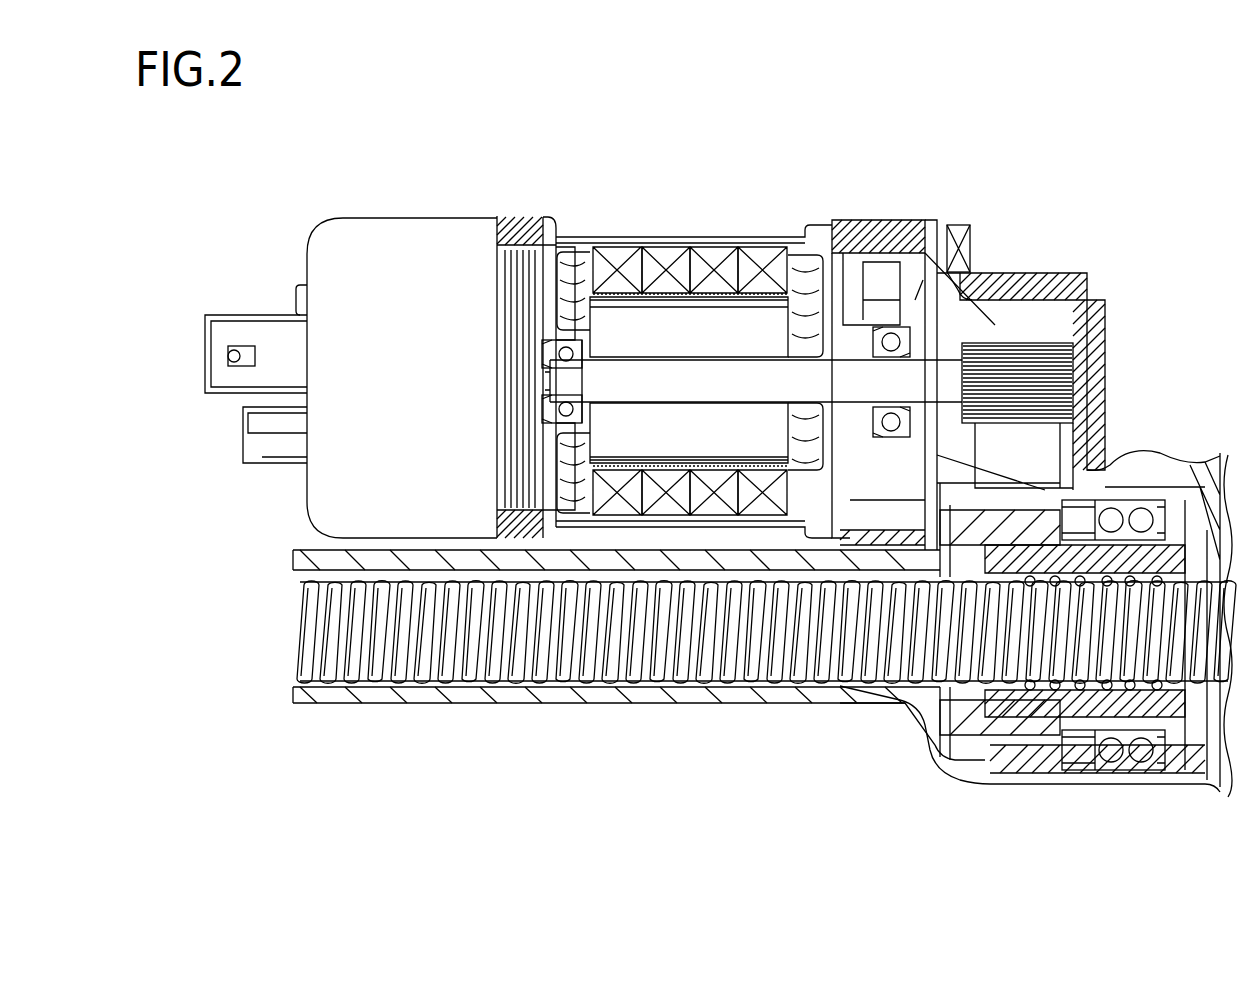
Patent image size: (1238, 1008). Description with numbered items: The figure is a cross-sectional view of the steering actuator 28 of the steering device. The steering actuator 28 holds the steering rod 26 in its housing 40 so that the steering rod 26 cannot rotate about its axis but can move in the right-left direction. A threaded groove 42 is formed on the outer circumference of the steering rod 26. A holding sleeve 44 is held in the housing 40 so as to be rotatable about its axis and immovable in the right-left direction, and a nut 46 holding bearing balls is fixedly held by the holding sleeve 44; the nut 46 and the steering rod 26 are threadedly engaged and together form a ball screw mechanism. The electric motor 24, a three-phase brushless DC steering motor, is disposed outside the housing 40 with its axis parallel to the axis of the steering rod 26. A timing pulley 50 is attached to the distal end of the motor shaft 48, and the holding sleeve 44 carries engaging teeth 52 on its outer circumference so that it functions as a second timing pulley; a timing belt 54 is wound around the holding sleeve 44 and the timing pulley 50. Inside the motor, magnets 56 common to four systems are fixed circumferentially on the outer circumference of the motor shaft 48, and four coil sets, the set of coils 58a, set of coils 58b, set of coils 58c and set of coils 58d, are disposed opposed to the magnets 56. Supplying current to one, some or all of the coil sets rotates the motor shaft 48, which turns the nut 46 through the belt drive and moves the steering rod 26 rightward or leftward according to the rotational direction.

The electric motor 24 is at (840, 191).
The steering rod 26 is at (582, 680).
The steering actuator 28 is at (1150, 100).
The housing 40 is at (770, 700).
The threaded groove 42 is at (672, 684).
The holding sleeve 44 is at (1008, 728).
The nut 46 is at (1045, 692).
The motor shaft 48 is at (905, 375).
The timing pulley 50 is at (1042, 375).
The engaging teeth 52 is at (1040, 770).
The timing belt 54 is at (1050, 457).
The magnets 56 is at (670, 325).
The set of coils 58a is at (656, 270).
The set of coils 58b is at (720, 268).
The set of coils 58c is at (619, 265).
The set of coils 58d is at (765, 265).